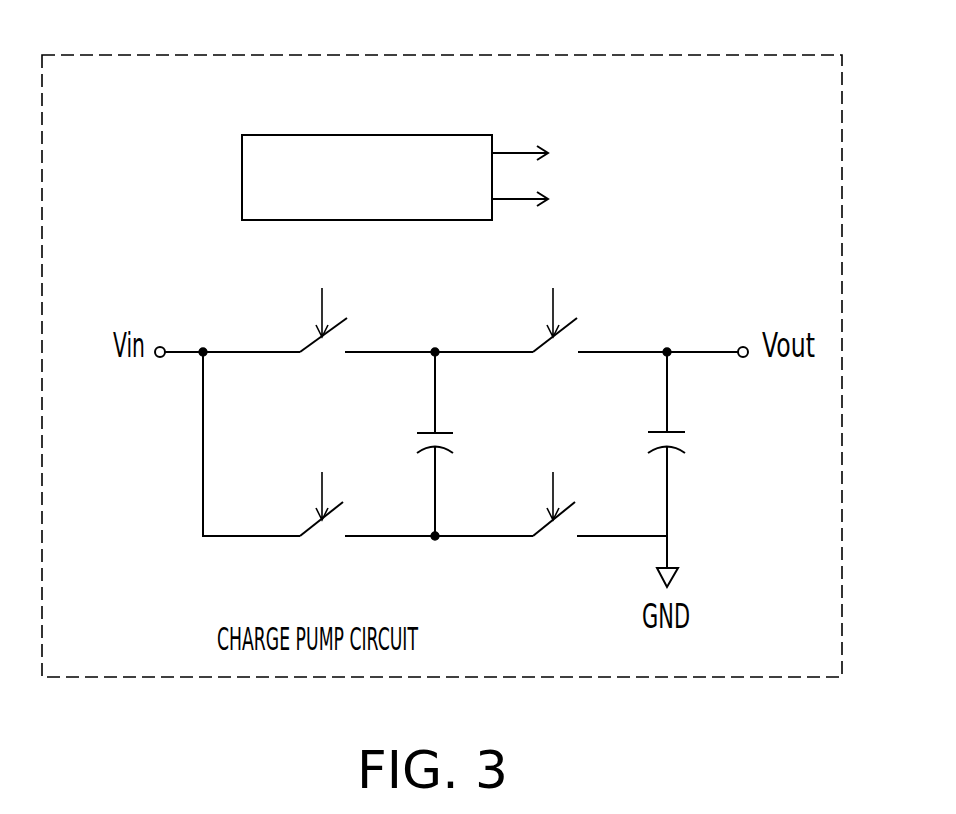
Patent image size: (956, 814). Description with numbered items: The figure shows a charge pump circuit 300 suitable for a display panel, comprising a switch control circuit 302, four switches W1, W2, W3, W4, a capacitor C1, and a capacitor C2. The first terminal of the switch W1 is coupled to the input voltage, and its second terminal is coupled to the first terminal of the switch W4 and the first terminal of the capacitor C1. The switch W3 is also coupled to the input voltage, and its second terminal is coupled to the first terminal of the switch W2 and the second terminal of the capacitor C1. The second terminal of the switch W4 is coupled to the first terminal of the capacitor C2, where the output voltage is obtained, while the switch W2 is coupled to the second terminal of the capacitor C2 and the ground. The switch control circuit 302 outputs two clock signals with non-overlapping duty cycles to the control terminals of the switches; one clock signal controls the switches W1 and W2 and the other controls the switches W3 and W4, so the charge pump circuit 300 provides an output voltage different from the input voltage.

The charge pump circuit 300 is at (648, 55).
The switch control circuit 302 is at (367, 135).
The switch W1 is at (321, 324).
The switch W2 is at (557, 505).
The switch W3 is at (325, 507).
The switch W4 is at (552, 324).
The capacitor C1 is at (453, 444).
The capacitor C2 is at (688, 460).